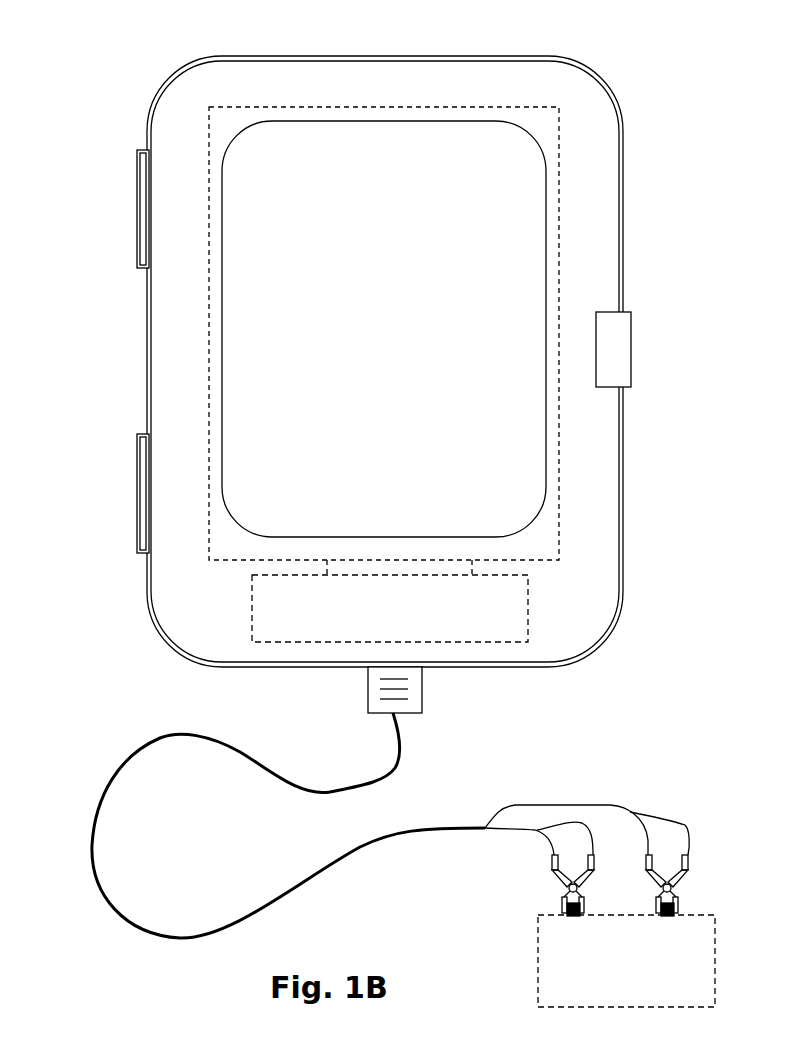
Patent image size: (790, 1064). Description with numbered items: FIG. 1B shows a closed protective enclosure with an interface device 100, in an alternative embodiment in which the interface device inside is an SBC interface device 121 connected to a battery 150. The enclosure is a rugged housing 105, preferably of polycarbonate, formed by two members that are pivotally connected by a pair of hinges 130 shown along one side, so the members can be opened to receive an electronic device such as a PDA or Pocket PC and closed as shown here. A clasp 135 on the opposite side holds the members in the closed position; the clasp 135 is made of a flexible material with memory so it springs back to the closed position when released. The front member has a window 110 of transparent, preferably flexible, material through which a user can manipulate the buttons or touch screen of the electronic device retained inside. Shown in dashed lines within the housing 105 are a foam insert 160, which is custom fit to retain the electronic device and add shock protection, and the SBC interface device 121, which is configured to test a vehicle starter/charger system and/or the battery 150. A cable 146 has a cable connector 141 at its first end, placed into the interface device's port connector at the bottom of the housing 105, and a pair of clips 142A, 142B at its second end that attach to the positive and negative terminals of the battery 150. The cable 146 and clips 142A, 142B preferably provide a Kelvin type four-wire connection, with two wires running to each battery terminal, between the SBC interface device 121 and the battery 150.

The protective enclosure with an interface device 100 is at (70, 120).
The housing 105 is at (623, 233).
The window 110 is at (547, 442).
The SBC interface device 121 is at (528, 627).
The hinges 130 is at (137, 240).
The clasp 135 is at (631, 345).
The cable connector 141 is at (422, 708).
The clip 142A is at (548, 872).
The clip 142B is at (687, 875).
The cable 146 is at (437, 832).
The battery 150 is at (538, 942).
The foam insert 160 is at (559, 143).